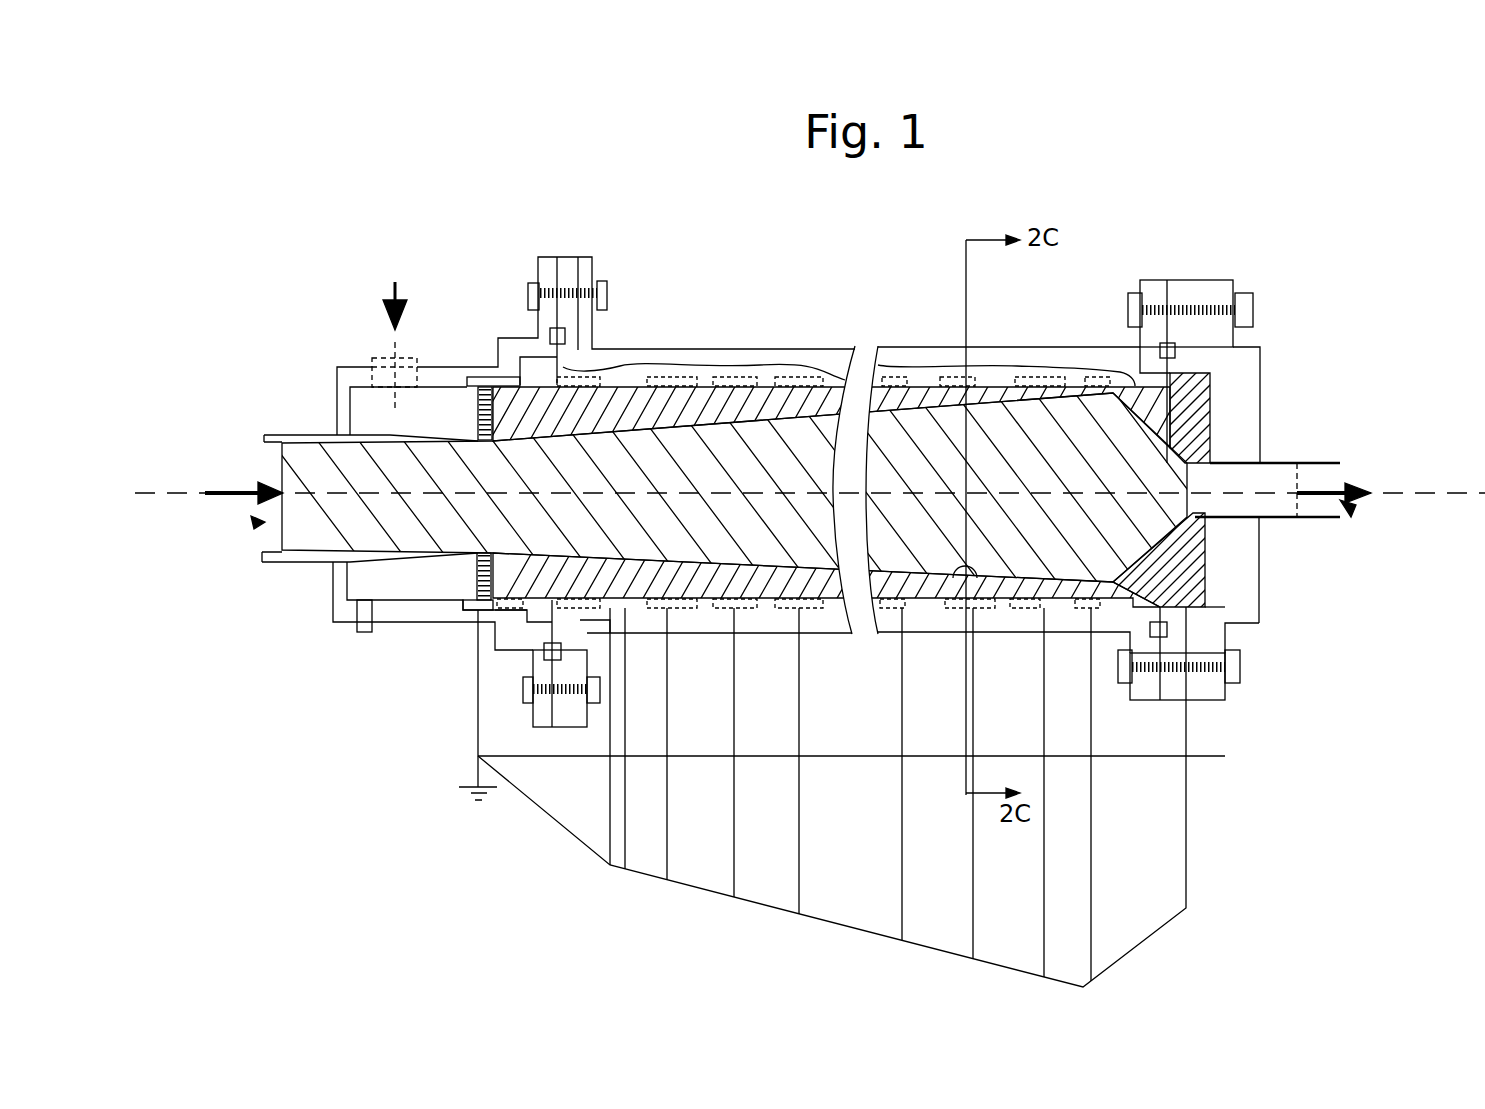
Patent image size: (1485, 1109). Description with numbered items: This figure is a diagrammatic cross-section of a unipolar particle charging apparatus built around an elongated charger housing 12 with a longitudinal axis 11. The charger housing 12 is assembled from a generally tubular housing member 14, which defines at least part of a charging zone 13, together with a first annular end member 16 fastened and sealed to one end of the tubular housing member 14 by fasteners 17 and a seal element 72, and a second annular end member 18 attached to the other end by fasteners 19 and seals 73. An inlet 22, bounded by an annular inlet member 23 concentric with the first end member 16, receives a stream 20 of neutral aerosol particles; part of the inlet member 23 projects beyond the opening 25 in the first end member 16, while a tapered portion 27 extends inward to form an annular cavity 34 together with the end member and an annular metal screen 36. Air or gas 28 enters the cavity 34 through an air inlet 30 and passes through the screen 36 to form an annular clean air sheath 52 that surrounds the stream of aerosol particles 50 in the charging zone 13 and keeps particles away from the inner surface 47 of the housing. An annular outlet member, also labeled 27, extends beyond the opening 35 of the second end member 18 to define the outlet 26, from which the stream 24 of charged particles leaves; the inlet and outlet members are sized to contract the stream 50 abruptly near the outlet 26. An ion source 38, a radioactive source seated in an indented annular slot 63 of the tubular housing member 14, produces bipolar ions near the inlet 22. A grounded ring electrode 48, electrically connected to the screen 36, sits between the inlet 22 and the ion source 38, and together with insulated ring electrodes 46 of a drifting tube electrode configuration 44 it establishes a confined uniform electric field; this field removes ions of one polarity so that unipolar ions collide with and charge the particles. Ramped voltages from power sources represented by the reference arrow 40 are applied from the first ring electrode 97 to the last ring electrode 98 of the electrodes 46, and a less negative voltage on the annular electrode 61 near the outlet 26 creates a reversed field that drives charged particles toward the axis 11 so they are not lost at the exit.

The longitudinal axis 11 is at (172, 495).
The charger housing 12 is at (930, 335).
The charging zone 13 is at (757, 443).
The tubular housing member 14 is at (683, 348).
The first annular end member 16 is at (450, 367).
The fasteners 17 is at (528, 280).
The second annular end member 18 is at (1237, 345).
The fasteners 19 is at (1247, 292).
The stream of aerosol particles 20 is at (216, 495).
The inlet 22 is at (260, 524).
The annular inlet member 23 is at (295, 561).
The stream of aerosol particles 24 is at (1357, 478).
The opening 25 is at (333, 425).
The outlet 26 is at (1352, 512).
The tapered portion of annular inlet member 27 is at (390, 431).
The air or gas 28 is at (393, 287).
The air inlet 30 is at (380, 357).
The annular cavity 34 is at (413, 622).
The opening 35 is at (1257, 527).
The annular metal screen 36 is at (477, 410).
The ion source 38 is at (527, 622).
The power sources 40 is at (1212, 824).
The drifting tube electrode configuration 44 is at (745, 352).
The insulated ring electrodes 46 is at (625, 368).
The inner surface 47 is at (965, 580).
The ring electrode 48 is at (481, 378).
The stream of aerosol particles 50 is at (1207, 603).
The annular clean air sheath 52 is at (745, 577).
The annular electrode 61 is at (1213, 390).
The indented annular slot 63 is at (495, 650).
The seal element 72 is at (560, 338).
The seals 73 is at (1168, 343).
The first ring electrode 97 is at (1094, 368).
The last ring electrode 98 is at (578, 272).